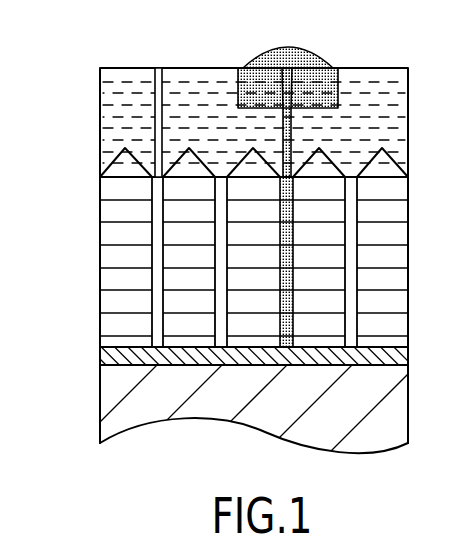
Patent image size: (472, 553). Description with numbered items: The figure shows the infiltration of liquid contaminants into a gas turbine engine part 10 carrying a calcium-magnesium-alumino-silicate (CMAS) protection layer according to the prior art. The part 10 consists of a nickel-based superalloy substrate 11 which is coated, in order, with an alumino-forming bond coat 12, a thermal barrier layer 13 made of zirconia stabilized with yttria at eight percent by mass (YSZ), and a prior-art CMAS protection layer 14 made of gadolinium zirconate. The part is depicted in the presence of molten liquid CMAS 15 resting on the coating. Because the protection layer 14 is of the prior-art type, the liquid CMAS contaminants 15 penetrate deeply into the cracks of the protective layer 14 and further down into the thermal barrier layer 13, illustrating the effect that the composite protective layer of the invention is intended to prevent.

The part 10 is at (74, 182).
The nickel-based superalloy substrate 11 is at (108, 404).
The alumino-forming bond coat 12 is at (112, 357).
The thermal barrier layer 13 is at (122, 268).
The CMAS protection layer 14 is at (110, 108).
The liquid CMAS 15 is at (287, 50).